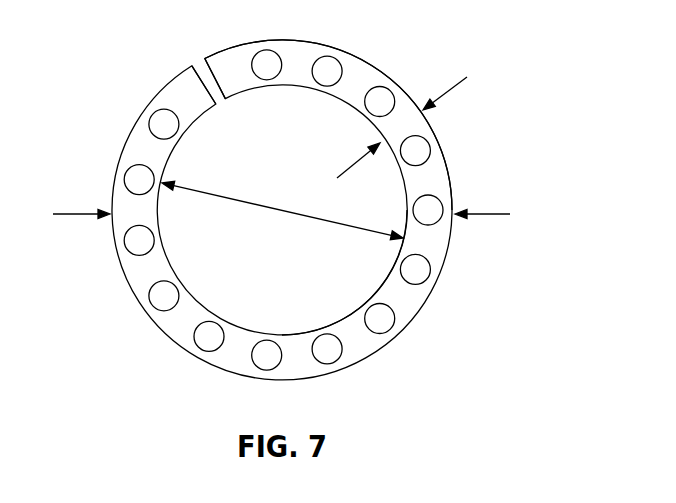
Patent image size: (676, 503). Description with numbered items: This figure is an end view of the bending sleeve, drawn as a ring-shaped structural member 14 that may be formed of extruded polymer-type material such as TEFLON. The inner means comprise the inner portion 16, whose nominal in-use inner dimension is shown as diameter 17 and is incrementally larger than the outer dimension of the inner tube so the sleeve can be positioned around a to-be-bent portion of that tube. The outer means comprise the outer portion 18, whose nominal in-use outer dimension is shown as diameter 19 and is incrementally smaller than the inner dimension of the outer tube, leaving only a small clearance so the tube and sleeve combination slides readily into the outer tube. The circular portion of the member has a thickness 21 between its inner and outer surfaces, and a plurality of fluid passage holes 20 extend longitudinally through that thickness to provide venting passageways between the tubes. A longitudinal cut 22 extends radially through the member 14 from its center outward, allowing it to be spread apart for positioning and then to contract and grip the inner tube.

The structural member 14 is at (426, 350).
The inner portion 16 is at (343, 320).
The inner diameter 17 is at (282, 208).
The outer portion 18 is at (365, 60).
The outer diameter 19 is at (488, 214).
The fluid passage holes 20 is at (165, 116).
The thickness 21 is at (453, 88).
The longitudinal cut 22 is at (205, 68).